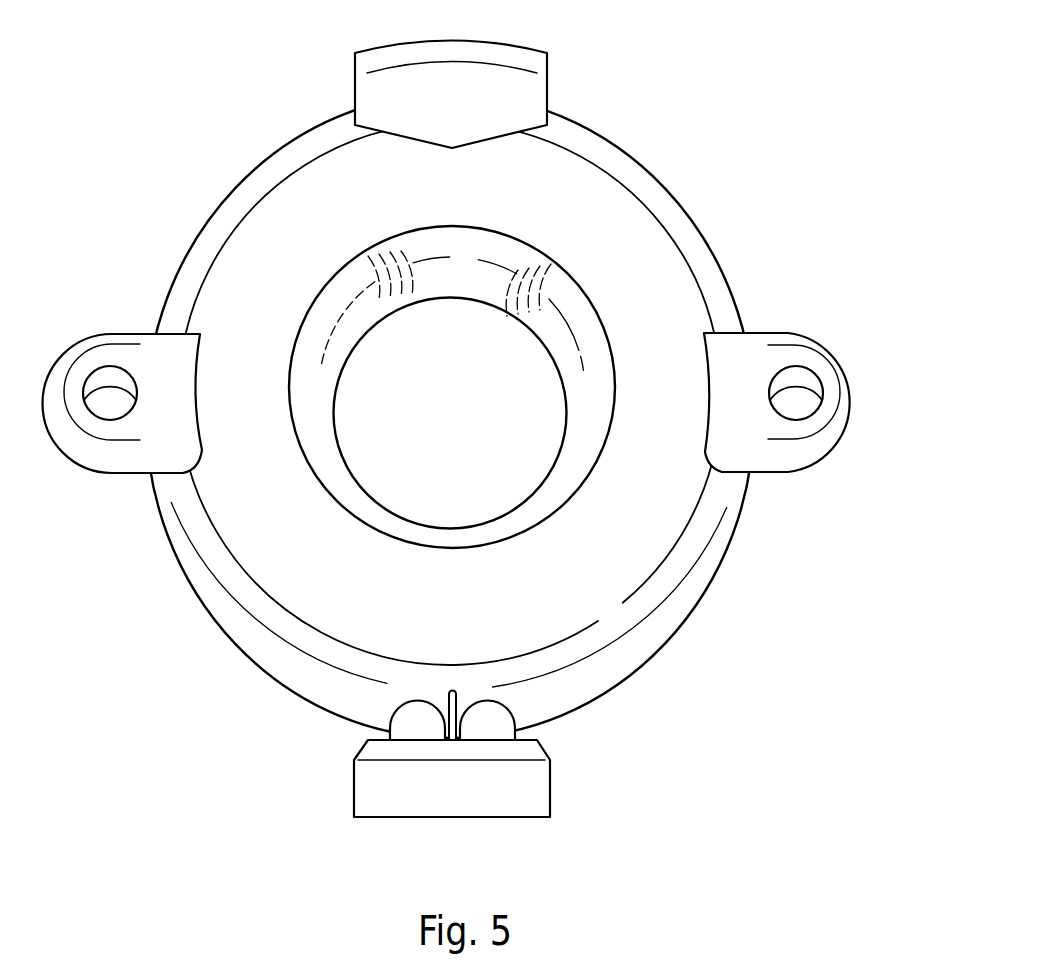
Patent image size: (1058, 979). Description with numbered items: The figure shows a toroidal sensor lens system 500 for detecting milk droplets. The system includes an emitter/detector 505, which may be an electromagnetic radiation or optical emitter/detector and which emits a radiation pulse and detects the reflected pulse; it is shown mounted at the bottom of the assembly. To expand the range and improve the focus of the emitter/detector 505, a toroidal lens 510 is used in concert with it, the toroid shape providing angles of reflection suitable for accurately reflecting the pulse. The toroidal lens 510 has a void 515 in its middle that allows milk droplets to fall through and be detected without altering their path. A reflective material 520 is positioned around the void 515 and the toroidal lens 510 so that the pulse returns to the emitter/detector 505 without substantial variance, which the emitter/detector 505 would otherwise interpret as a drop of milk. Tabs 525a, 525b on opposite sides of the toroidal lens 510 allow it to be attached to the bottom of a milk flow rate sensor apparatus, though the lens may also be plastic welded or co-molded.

The toroidal sensor lens system 500 is at (497, 415).
The emitter/detector 505 is at (377, 753).
The toroidal lens 510 is at (682, 577).
The void 515 is at (378, 350).
The reflective material 520 is at (318, 333).
The tab 525a is at (837, 388).
The tab 525b is at (95, 463).